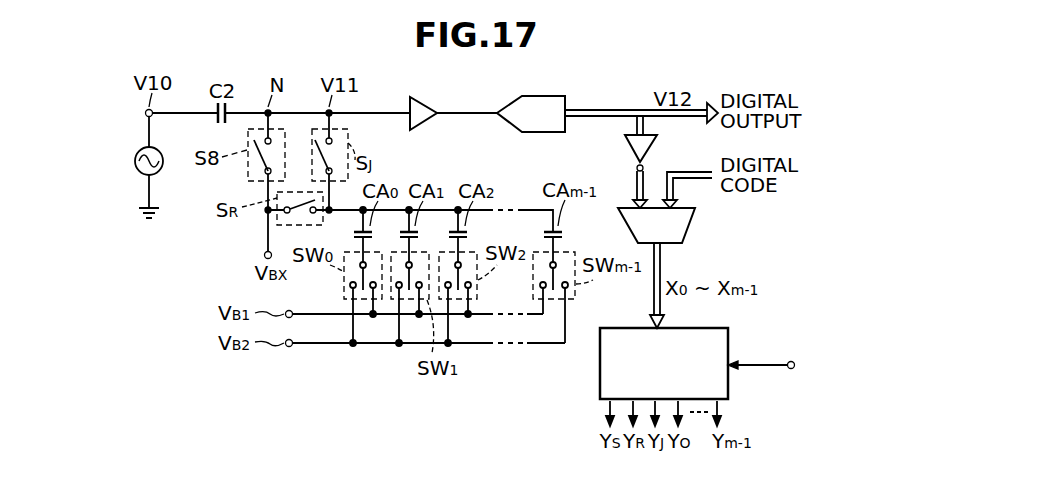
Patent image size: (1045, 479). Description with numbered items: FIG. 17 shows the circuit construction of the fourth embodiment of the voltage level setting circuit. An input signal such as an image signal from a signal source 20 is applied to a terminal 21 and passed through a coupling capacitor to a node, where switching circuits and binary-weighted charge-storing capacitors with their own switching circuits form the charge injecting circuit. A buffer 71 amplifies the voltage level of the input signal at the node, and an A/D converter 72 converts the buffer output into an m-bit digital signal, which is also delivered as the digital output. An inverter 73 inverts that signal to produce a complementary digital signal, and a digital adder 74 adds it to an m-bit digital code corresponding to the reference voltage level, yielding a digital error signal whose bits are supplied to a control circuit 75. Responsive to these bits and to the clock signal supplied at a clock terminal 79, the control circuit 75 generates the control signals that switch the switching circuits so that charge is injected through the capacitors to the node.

The signal source 20 is at (140, 177).
The terminal 21 is at (143, 114).
The buffer 71 is at (430, 93).
The A/D converter 72 is at (542, 93).
The inverter 73 is at (628, 146).
The digital adder 74 is at (688, 223).
The control circuit 75 is at (730, 340).
The clock input terminal 79 is at (791, 361).